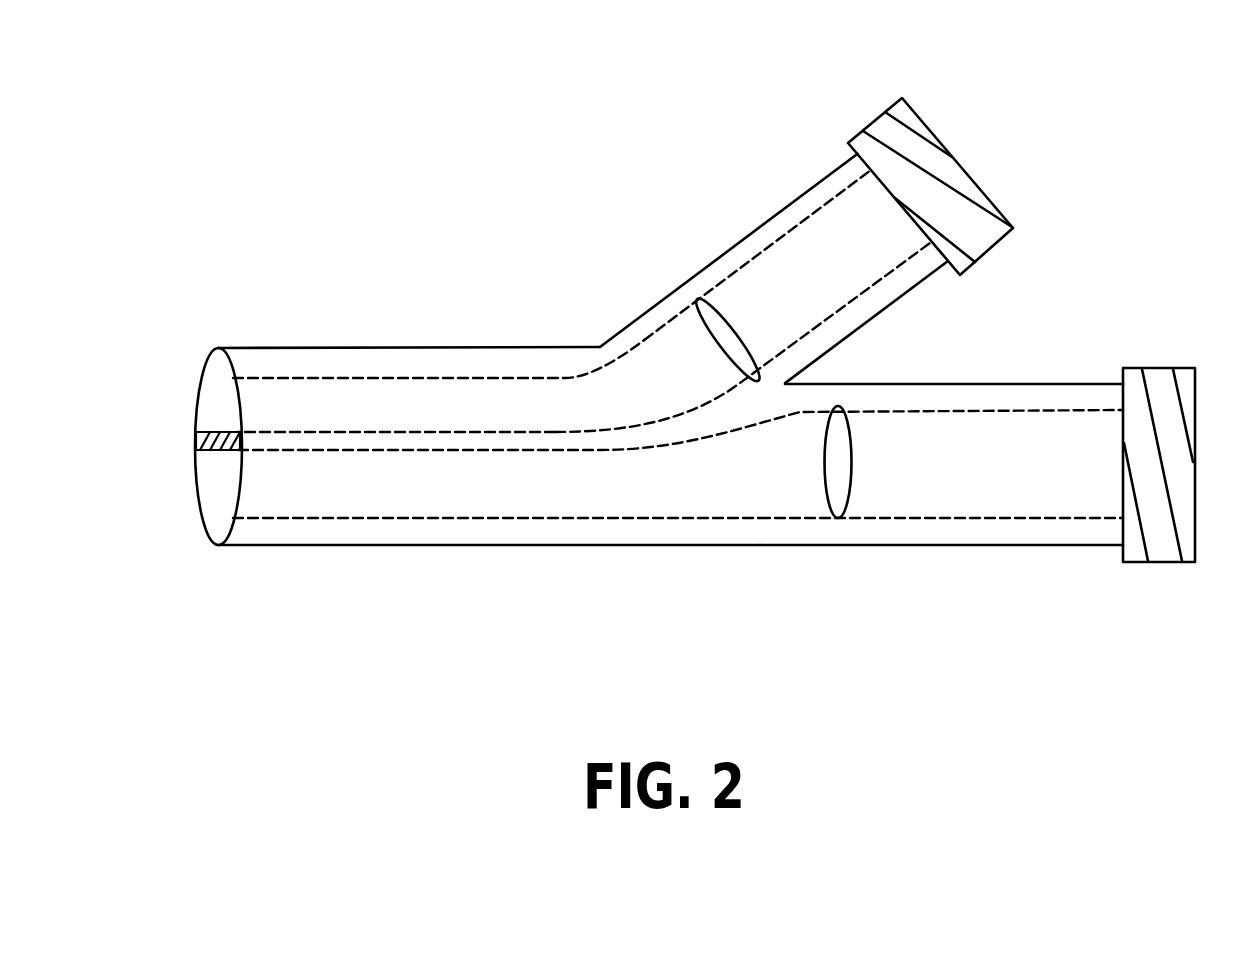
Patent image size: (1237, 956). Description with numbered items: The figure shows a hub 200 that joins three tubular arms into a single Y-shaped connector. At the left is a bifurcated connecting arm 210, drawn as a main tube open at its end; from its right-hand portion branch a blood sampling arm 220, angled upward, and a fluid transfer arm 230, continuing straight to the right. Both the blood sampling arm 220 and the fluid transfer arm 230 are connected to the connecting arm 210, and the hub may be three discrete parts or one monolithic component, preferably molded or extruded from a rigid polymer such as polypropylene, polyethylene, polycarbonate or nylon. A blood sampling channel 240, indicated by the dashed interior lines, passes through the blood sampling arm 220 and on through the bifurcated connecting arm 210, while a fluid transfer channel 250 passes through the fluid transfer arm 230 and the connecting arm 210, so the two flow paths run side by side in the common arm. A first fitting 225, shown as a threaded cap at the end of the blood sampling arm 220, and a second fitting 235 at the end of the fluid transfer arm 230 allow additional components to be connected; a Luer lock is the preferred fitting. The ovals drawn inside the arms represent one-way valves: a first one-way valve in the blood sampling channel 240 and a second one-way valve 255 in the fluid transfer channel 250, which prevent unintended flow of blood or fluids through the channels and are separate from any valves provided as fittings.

The hub 200 is at (703, 352).
The bifurcated connecting arm 210 is at (659, 428).
The blood sampling arm 220 is at (816, 371).
The first fitting 225 is at (970, 196).
The fluid transfer arm 230 is at (985, 473).
The second fitting 235 is at (1163, 382).
The blood sampling channel 240 is at (327, 413).
The fluid transfer channel 250 is at (482, 497).
The second one-way valve 255 is at (852, 442).